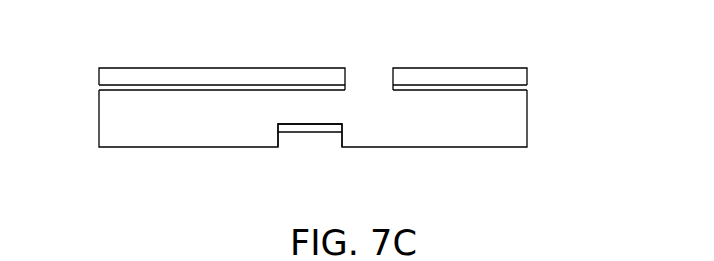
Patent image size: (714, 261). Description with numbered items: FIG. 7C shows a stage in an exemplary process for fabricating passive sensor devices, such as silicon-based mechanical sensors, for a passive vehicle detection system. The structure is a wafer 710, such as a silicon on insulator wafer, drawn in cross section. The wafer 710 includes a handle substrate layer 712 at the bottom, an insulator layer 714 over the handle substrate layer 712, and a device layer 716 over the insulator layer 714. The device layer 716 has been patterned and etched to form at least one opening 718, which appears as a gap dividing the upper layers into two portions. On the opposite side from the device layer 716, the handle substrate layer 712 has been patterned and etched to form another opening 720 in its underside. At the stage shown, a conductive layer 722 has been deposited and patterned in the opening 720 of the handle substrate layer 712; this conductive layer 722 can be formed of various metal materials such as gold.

The wafer 710 is at (319, 104).
The handle substrate layer 712 is at (107, 131).
The insulator layer 714 is at (98, 88).
The device layer 716 is at (143, 75).
The opening 718 is at (367, 62).
The opening 720 is at (315, 140).
The conductive layer 722 is at (293, 133).